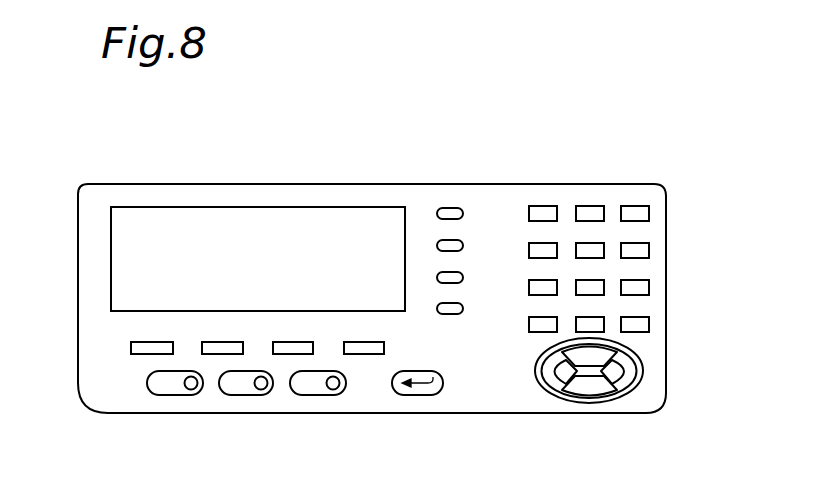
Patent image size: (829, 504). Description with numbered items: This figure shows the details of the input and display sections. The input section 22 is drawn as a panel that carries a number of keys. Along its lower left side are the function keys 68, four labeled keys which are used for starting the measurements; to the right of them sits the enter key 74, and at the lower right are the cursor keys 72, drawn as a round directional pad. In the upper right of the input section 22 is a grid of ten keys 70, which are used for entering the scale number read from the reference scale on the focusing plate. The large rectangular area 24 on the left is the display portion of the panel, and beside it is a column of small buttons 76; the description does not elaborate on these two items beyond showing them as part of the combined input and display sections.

The input section 22 is at (513, 207).
The display 24 is at (182, 204).
The display side buttons 76 is at (316, 223).
The ten keys 70 is at (648, 198).
The function keys 68 is at (120, 345).
The enter key 74 is at (417, 392).
The cursor keys 72 is at (538, 390).